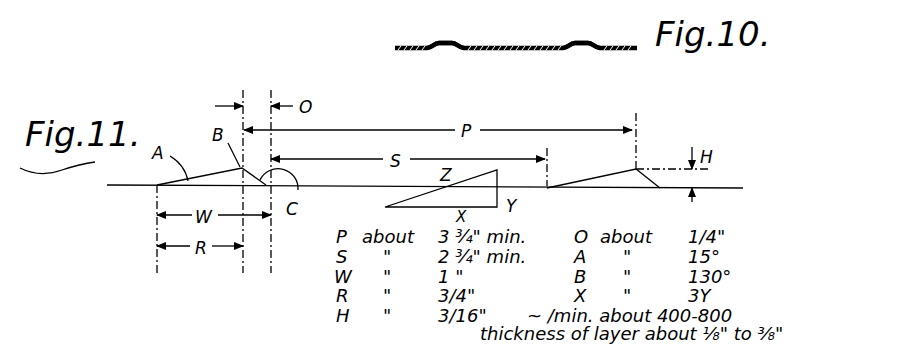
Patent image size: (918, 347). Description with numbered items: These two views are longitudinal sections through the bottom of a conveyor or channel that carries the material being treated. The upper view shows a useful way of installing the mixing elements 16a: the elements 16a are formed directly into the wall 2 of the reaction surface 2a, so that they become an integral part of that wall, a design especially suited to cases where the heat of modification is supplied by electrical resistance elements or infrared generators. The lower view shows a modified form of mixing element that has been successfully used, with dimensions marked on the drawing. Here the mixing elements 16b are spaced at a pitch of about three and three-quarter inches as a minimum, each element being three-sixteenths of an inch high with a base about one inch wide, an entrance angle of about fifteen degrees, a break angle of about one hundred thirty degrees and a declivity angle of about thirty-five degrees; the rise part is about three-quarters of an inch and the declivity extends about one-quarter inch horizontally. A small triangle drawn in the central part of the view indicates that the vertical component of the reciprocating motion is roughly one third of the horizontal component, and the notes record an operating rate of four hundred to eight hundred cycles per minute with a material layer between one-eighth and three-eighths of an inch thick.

In FIG. 10, the wall 2 is at (395, 48).
In FIG. 10, the reaction surface 2a is at (413, 45).
In FIG. 10, the mixing elements 16a is at (443, 42).
In FIG. 11, the mixing elements 16b is at (222, 168).